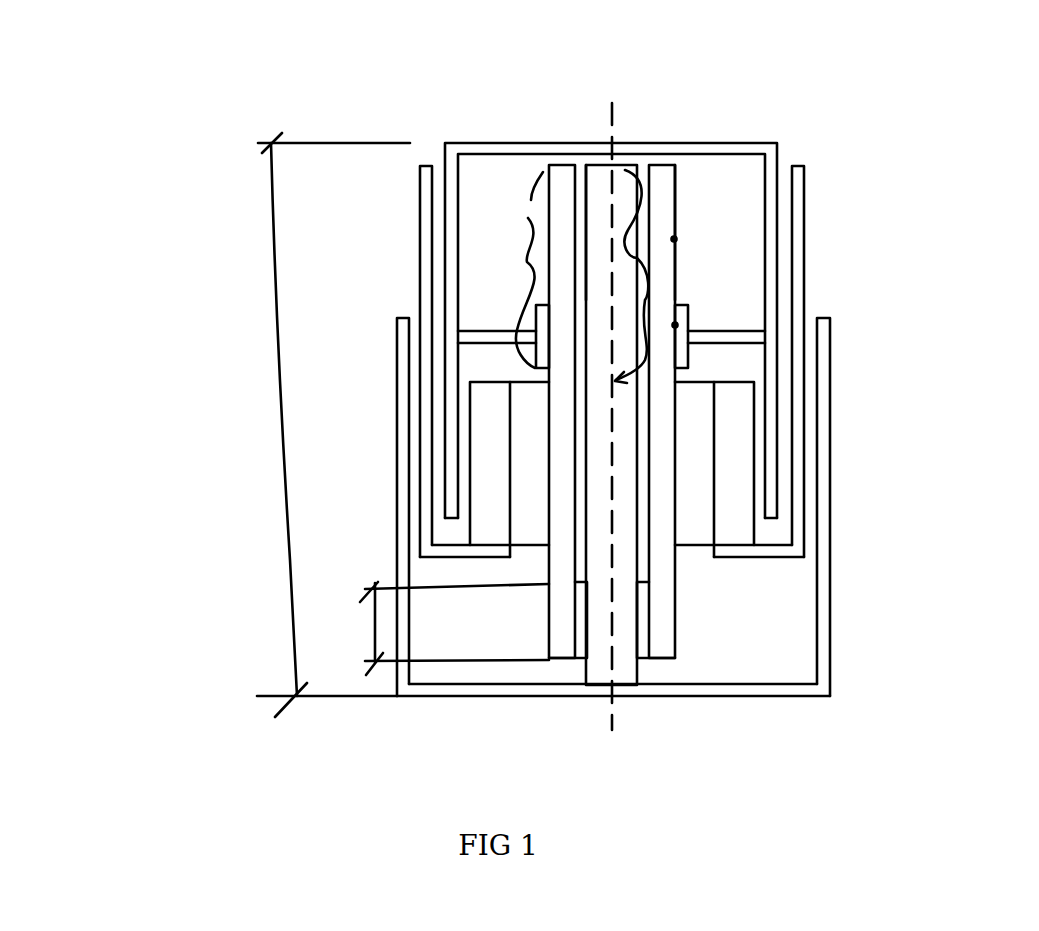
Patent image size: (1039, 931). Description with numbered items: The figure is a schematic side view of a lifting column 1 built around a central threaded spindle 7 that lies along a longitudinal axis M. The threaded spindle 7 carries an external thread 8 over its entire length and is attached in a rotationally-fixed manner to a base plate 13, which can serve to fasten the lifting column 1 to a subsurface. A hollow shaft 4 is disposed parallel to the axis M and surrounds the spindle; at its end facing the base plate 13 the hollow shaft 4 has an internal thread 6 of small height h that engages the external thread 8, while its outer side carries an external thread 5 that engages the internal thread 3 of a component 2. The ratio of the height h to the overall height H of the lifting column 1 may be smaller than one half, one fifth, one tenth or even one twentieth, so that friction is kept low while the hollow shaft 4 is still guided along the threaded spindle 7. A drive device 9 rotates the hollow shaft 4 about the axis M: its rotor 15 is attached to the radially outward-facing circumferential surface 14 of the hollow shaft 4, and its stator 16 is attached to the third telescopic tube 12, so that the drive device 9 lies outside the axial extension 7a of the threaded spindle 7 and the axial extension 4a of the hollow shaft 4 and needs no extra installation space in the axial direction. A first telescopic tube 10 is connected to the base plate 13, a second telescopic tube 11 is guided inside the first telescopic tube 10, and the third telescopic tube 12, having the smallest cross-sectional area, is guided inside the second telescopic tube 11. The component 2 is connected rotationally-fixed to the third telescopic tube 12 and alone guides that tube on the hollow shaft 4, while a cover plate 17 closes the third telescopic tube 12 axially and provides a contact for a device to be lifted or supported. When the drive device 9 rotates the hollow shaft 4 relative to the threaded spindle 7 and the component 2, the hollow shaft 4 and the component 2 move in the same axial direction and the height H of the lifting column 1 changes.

The lifting column 1 is at (835, 108).
The component 2 is at (683, 342).
The internal thread 3 is at (675, 325).
The hollow shaft 4 is at (658, 183).
The axial extension of the hollow shaft 4a is at (527, 262).
The external thread 5 is at (674, 239).
The internal thread 6 is at (650, 625).
The threaded spindle 7 is at (598, 175).
The axial extension of the threaded spindle 7a is at (637, 258).
The external thread 8 is at (584, 209).
The drive device 9 is at (722, 488).
The first telescopic tube 10 is at (830, 652).
The second telescopic tube 11 is at (795, 528).
The third telescopic tube 12 is at (768, 313).
The base plate 13 is at (728, 686).
The circumferential surface 14 is at (677, 553).
The rotor 15 is at (693, 435).
The stator 16 is at (732, 448).
The cover plate 17 is at (700, 142).
The longitudinal axis M is at (612, 117).
The height of the lifting column H is at (278, 323).
The height of the internal thread h is at (373, 628).